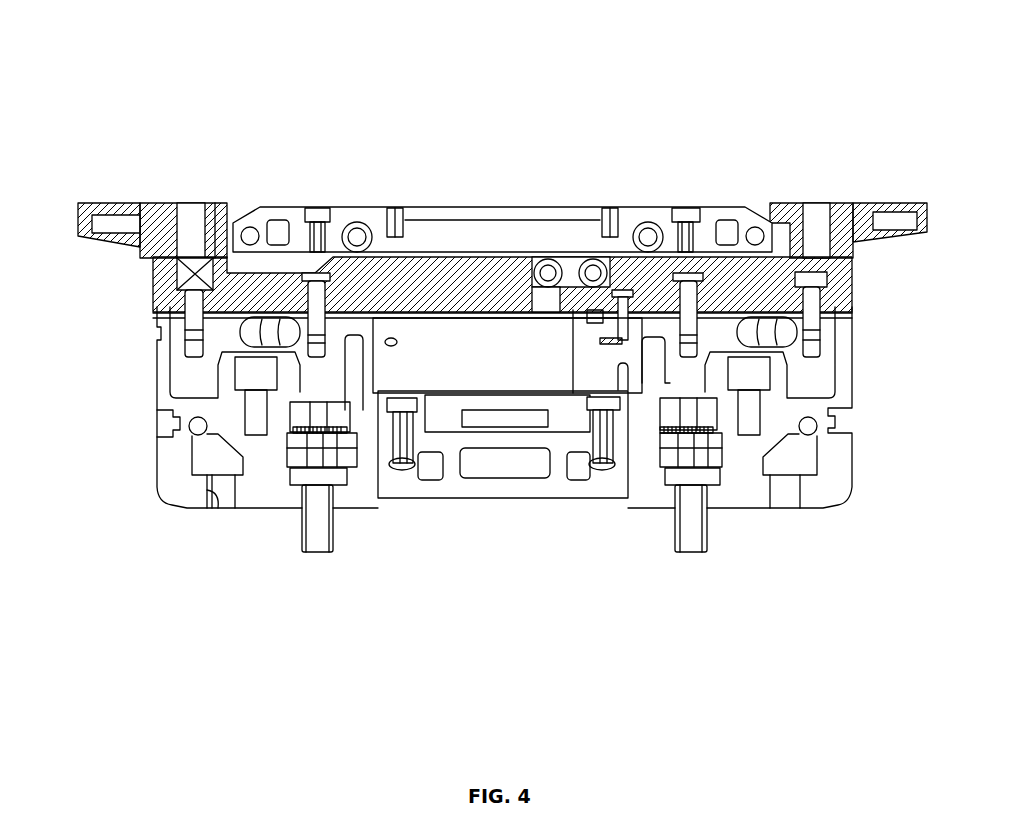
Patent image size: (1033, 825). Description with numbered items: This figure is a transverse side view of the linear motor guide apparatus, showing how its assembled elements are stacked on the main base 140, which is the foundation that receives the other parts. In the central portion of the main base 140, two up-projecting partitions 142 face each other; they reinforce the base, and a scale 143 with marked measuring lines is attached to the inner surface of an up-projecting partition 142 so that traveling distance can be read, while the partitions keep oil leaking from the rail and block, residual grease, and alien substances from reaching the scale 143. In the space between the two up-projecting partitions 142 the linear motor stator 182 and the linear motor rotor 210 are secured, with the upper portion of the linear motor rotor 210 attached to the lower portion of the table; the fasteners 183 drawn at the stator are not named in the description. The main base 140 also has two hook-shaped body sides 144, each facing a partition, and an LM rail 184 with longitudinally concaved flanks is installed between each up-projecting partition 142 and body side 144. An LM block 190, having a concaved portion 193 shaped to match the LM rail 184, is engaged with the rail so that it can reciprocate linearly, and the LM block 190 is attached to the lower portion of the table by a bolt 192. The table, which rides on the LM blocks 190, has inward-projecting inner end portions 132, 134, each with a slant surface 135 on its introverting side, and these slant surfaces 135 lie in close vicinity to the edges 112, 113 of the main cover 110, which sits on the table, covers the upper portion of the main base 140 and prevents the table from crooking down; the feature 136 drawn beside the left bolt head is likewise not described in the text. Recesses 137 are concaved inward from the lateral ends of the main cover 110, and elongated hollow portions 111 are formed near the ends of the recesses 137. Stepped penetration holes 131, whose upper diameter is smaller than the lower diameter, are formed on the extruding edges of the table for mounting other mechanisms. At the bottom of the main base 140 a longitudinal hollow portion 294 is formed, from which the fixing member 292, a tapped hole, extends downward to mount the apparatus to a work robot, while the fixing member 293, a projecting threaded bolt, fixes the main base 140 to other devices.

The main cover 110 is at (521, 208).
The elongated hollow portions 111 is at (290, 208).
The edge of the main cover 112 is at (262, 208).
The edge of the main cover 113 is at (718, 215).
The stepped penetration hole 131 is at (120, 207).
The inner end portion 132 is at (790, 203).
The inner end portion 134 is at (160, 207).
The slant surface 135 is at (238, 207).
The bolt head 136 is at (180, 300).
The recess 137 is at (488, 335).
The main base 140 is at (560, 505).
The up-projecting partition 142 is at (363, 505).
The scale 143 is at (356, 365).
The body side 144 is at (158, 366).
The linear motor stator 182 is at (558, 420).
The center bolts 183 is at (414, 463).
The LM rail 184 is at (190, 427).
The LM block 190 is at (185, 357).
The bolt 192 is at (446, 310).
The concaved portion 193 is at (225, 356).
The linear motor rotor 210 is at (524, 258).
The fixing member 292 is at (210, 505).
The fixing member 293 is at (315, 500).
The hollow portion 294 is at (195, 455).